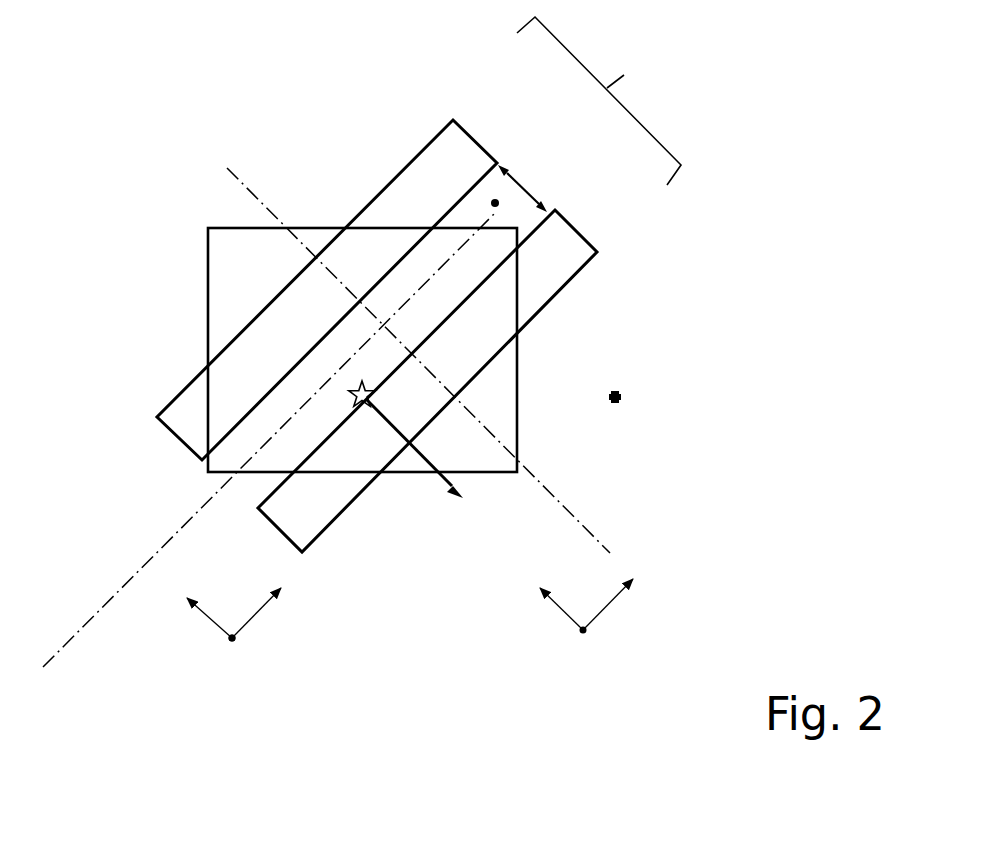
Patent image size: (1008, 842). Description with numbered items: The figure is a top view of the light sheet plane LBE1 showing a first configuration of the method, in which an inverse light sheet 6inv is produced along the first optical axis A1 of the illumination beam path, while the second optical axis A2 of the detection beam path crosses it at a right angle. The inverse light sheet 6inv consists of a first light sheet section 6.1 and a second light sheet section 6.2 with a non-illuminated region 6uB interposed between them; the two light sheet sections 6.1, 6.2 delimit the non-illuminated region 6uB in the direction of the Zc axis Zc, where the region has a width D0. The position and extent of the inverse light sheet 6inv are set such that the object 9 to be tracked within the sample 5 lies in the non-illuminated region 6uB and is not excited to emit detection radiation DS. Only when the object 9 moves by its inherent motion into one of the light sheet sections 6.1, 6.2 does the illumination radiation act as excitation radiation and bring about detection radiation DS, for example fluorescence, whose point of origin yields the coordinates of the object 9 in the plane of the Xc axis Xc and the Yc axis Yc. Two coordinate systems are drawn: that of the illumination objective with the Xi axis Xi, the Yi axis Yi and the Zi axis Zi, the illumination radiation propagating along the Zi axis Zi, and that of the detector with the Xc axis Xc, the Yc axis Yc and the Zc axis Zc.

The sample 5 is at (214, 270).
The first light sheet section 6.1 is at (483, 150).
The second light sheet section 6.2 is at (578, 232).
The inverse light sheet 6inv is at (611, 101).
The non-illuminated region 6uB is at (498, 199).
The distance D0 is at (510, 178).
The object 9 is at (363, 403).
The detection radiation DS is at (448, 489).
The light sheet plane LBE1 is at (622, 401).
The first optical axis A1 is at (140, 570).
The second optical axis A2 is at (552, 495).
The Xi axis Xi is at (192, 612).
The Yi axis Yi is at (229, 657).
The Zi axis Zi is at (271, 613).
The Xc axis Xc is at (626, 604).
The Yc axis Yc is at (565, 643).
The Zc axis Zc is at (541, 600).